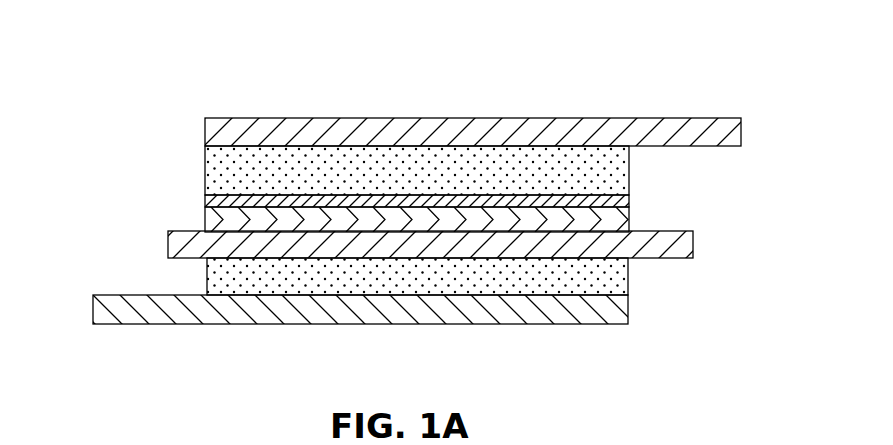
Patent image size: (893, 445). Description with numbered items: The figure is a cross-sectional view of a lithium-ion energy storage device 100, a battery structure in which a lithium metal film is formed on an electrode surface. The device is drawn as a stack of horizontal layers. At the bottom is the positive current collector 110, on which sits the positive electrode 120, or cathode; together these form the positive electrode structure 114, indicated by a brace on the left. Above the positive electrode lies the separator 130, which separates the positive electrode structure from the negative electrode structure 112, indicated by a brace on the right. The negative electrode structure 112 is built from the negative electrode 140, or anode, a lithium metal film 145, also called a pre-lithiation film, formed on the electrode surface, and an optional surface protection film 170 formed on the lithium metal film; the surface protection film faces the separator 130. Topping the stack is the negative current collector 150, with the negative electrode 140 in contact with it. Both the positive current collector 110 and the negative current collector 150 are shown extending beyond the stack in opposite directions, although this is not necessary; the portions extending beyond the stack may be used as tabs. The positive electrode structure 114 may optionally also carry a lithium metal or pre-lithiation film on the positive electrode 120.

The lithium-ion energy storage device 100 is at (141, 38).
The positive current collector 110 is at (212, 324).
The negative electrode structure 112 is at (761, 157).
The positive electrode structure 114 is at (63, 252).
The positive electrode 120 is at (630, 280).
The separator 130 is at (167, 248).
The negative electrode 140 is at (560, 157).
The lithium metal film 145 is at (632, 200).
The negative current collector 150 is at (297, 124).
The surface protection film 170 is at (205, 218).